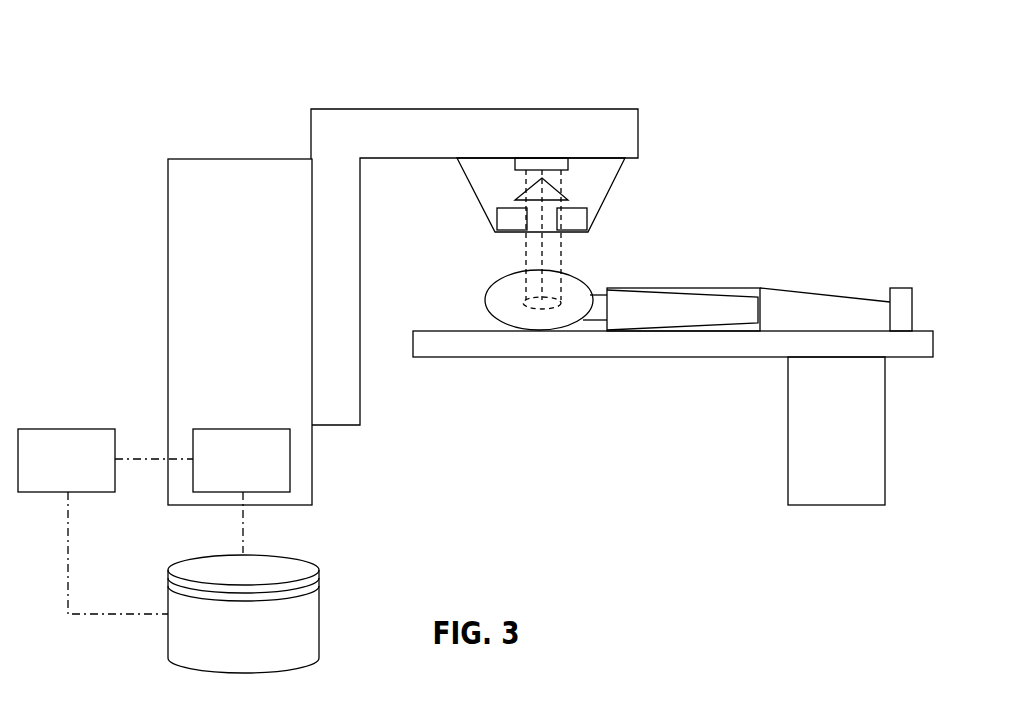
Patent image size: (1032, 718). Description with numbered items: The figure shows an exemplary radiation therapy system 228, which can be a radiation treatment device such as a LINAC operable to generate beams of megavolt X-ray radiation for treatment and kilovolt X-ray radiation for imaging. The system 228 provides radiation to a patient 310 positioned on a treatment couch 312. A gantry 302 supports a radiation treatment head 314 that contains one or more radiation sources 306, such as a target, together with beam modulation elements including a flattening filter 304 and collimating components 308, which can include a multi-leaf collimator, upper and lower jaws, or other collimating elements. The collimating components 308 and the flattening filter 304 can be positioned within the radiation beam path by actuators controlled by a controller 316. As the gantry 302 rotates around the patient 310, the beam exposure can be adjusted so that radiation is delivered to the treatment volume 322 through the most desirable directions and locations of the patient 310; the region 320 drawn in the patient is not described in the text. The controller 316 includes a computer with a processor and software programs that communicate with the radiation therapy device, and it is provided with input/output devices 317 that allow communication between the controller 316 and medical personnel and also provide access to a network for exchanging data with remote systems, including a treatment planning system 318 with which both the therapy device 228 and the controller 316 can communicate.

The radiation therapy system 228 is at (120, 107).
The gantry 302 is at (311, 138).
The flattening filter 304 is at (567, 170).
The radiation source 306 is at (537, 158).
The collimating components 308 is at (593, 223).
The patient 310 is at (813, 292).
The treatment couch 312 is at (738, 358).
The radiation treatment head 314 is at (612, 185).
The controller 316 is at (237, 429).
The input/output devices 317 is at (100, 429).
The treatment planning system 318 is at (320, 613).
The target region of patient 320 is at (523, 255).
The treatment volume 322 is at (540, 307).